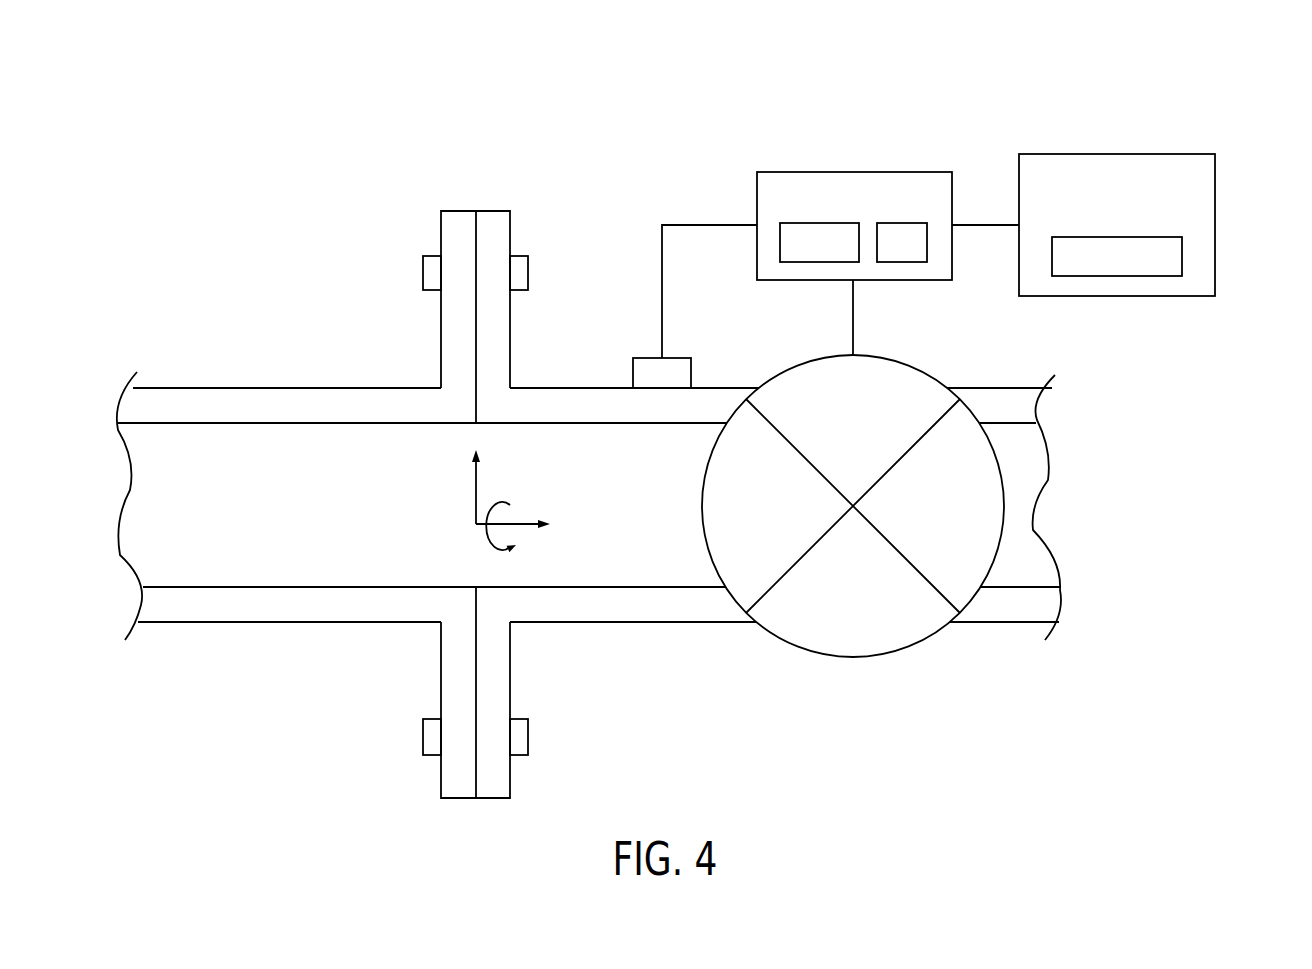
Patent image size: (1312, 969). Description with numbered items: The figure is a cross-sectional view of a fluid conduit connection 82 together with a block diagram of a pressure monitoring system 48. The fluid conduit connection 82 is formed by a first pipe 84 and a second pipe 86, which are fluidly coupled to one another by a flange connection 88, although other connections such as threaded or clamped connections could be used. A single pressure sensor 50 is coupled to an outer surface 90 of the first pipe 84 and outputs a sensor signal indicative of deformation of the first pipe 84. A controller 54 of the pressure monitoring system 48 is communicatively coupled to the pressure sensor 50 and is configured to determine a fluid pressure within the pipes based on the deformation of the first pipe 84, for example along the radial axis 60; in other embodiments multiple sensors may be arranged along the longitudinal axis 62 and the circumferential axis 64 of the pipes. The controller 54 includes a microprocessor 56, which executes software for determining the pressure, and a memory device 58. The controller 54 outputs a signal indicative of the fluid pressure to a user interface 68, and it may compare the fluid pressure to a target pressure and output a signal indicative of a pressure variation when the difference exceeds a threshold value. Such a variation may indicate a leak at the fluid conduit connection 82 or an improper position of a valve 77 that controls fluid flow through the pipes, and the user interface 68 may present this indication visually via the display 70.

The pressure monitoring system 48 is at (976, 139).
The pressure sensor 50 is at (691, 336).
The controller 54 is at (888, 227).
The microprocessor 56 is at (897, 262).
The memory device 58 is at (816, 262).
The radial axis 60 is at (474, 478).
The longitudinal axis 62 is at (522, 528).
The circumferential axis 64 is at (487, 535).
The user interface 68 is at (1154, 246).
The display 70 is at (1115, 276).
The valve 77 is at (907, 363).
The fluid conduit connection 82 is at (498, 190).
The first pipe 84 is at (633, 622).
The second pipe 86 is at (283, 388).
The flange connection 88 is at (546, 776).
The outer surface 90 is at (716, 388).